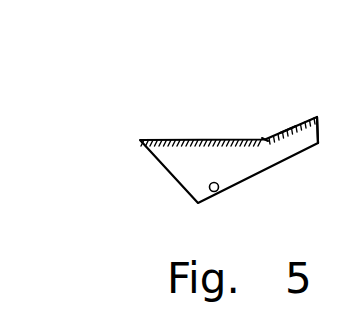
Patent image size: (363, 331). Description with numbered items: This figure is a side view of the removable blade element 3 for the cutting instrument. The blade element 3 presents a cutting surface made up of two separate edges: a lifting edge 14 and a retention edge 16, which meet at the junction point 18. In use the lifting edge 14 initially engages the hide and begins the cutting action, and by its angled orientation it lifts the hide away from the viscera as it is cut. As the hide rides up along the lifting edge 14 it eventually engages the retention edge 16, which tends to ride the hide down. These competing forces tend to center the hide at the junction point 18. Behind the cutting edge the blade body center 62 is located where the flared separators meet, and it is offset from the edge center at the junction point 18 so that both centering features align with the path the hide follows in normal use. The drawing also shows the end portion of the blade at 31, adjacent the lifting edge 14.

The blade element 3 is at (243, 160).
The lifting edge 14 is at (288, 129).
The retention edge 16 is at (167, 139).
The junction point 18 is at (264, 138).
The blade end 31 is at (317, 117).
The blade body center 62 is at (265, 139).